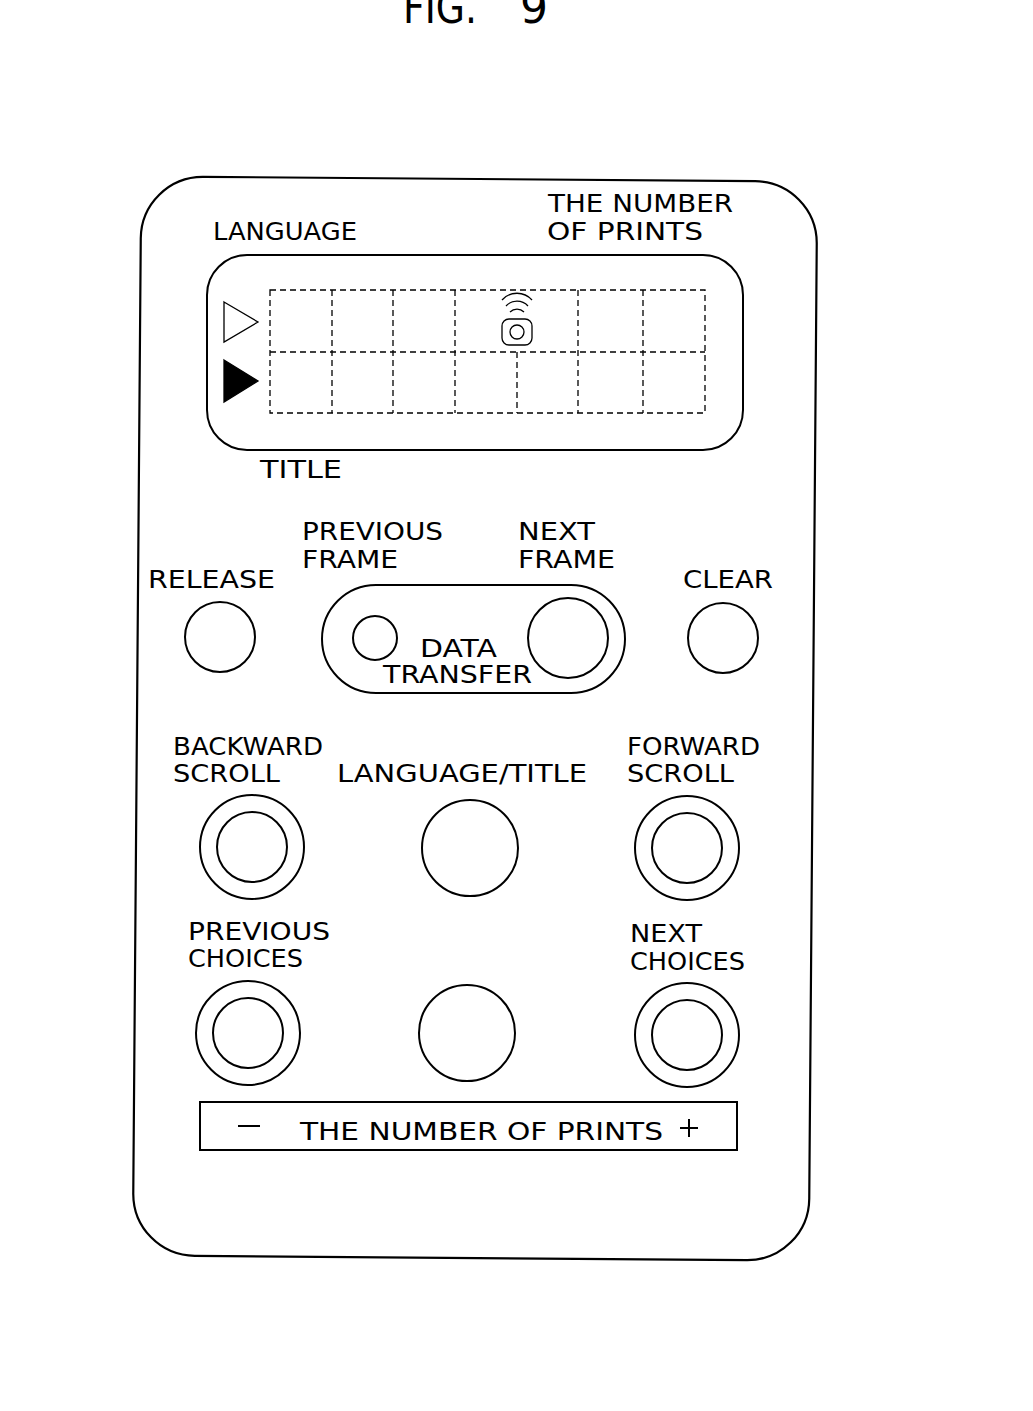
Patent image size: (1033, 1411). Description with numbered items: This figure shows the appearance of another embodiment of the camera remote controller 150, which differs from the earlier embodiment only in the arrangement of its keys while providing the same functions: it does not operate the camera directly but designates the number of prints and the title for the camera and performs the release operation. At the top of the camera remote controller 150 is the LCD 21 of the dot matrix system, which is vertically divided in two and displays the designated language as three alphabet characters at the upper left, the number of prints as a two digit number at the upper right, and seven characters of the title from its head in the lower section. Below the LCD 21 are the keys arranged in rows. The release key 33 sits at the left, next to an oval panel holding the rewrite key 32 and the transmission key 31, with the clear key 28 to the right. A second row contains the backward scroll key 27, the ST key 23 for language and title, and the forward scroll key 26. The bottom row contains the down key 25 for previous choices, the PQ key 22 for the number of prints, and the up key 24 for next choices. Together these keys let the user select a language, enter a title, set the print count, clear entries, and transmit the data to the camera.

The camera remote controller 150 is at (648, 168).
The LCD 21 is at (743, 352).
The PQ key 22 is at (500, 1040).
The ST key 23 is at (510, 855).
The up key 24 is at (715, 1046).
The down key 25 is at (235, 1050).
The forward scroll key 26 is at (715, 856).
The backward scroll key 27 is at (235, 862).
The clear key 28 is at (754, 644).
The transmission key 31 is at (597, 625).
The rewrite key 32 is at (393, 623).
The release key 33 is at (205, 640).